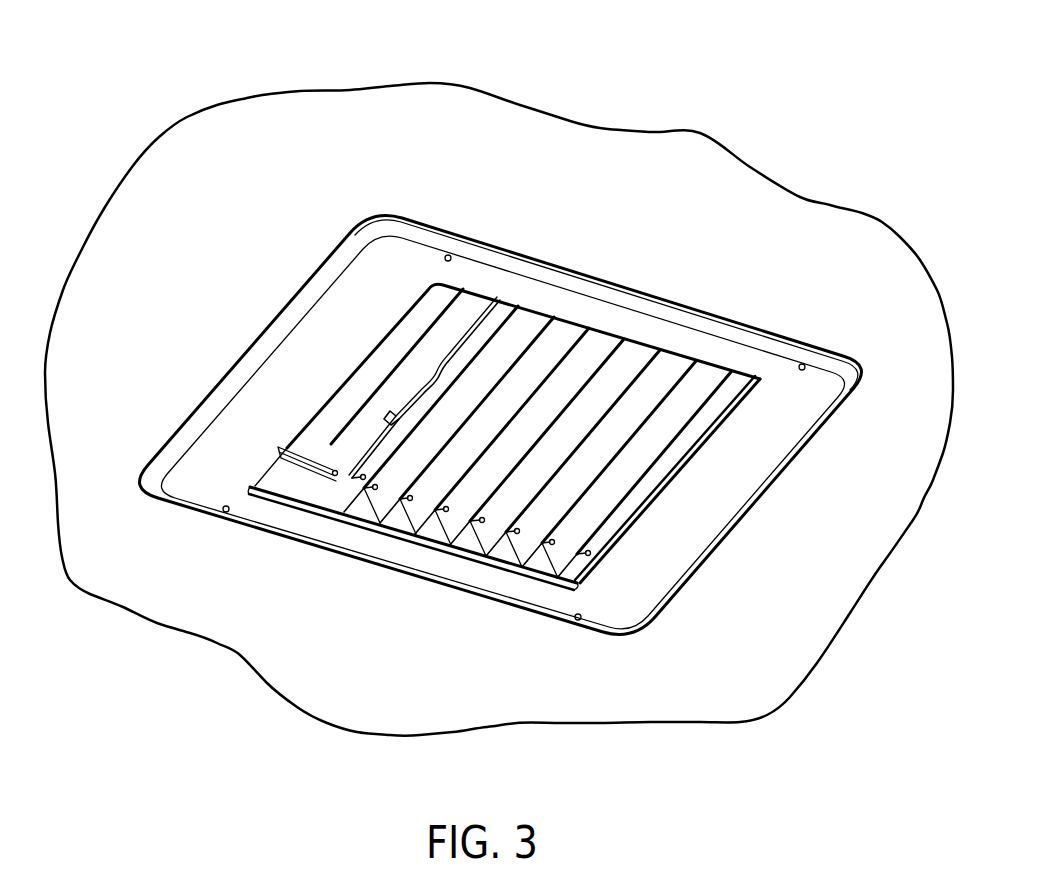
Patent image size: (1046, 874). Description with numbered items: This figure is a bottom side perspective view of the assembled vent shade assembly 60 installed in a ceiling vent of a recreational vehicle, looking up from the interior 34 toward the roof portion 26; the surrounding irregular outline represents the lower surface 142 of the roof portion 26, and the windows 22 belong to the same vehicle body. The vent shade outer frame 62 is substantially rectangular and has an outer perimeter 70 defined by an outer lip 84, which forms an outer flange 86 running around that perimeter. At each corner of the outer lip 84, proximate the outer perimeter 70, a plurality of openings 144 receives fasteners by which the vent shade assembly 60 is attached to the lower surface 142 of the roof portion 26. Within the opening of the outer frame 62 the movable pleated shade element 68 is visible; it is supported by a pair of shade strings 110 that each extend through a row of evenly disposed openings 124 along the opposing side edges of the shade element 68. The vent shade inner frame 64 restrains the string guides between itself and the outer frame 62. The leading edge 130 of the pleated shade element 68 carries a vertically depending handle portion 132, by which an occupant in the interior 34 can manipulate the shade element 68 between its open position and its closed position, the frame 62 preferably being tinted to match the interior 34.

The windows 22 is at (605, 332).
The roof portion 26 is at (697, 700).
The interior 34 is at (735, 625).
The vent shade assembly 60 is at (373, 183).
The vent shade outer frame 62 is at (703, 338).
The vent shade inner frame 64 is at (316, 470).
The movable pleated shade element 68 is at (482, 535).
The outer perimeter 70 is at (800, 450).
The outer lip 84 is at (353, 545).
The outer flange 86 is at (553, 270).
The shade strings 110 is at (312, 430).
The openings 124 is at (400, 482).
The leading edge 130 is at (450, 337).
The handle portion 132 is at (411, 407).
The lower surface 142 is at (612, 687).
The openings 144 is at (450, 258).